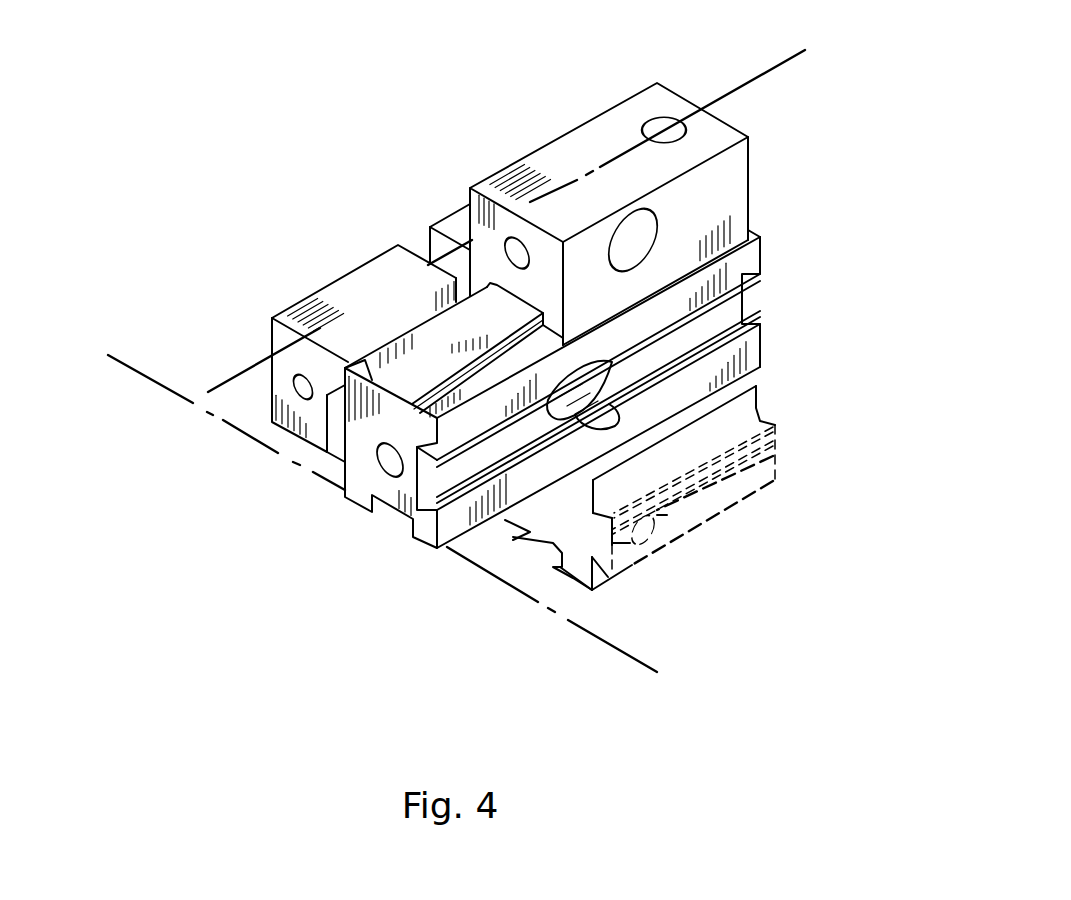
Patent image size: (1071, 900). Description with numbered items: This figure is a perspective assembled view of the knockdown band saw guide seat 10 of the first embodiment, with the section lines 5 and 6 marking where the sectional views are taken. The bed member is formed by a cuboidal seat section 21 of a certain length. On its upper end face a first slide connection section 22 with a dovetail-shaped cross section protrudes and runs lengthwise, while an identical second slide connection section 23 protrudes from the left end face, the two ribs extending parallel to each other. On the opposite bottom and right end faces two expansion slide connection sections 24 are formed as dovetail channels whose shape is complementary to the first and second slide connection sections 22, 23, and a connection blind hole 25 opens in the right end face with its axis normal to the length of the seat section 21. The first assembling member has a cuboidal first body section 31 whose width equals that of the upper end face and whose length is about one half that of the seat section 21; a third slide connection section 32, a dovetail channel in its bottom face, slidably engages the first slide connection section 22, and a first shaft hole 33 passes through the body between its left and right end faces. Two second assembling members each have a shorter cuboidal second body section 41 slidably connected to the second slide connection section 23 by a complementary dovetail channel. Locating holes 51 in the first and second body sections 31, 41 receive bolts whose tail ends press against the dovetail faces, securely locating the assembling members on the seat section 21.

The knockdown band saw guide seat 10 is at (141, 721).
The seat section 21 is at (762, 257).
The first slide connection section 22 is at (398, 387).
The second slide connection section 23 is at (337, 435).
The expansion slide connection section 24 is at (753, 305).
The connection blind hole 25 is at (592, 380).
The first body section 31 is at (752, 185).
The third slide connection section 32 is at (505, 287).
The first shaft hole 33 is at (633, 240).
The second body section 41 is at (447, 205).
The locating hole 51 is at (660, 123).
The section line 5- 5 is at (128, 370).
The section line 6- 6 is at (235, 320).